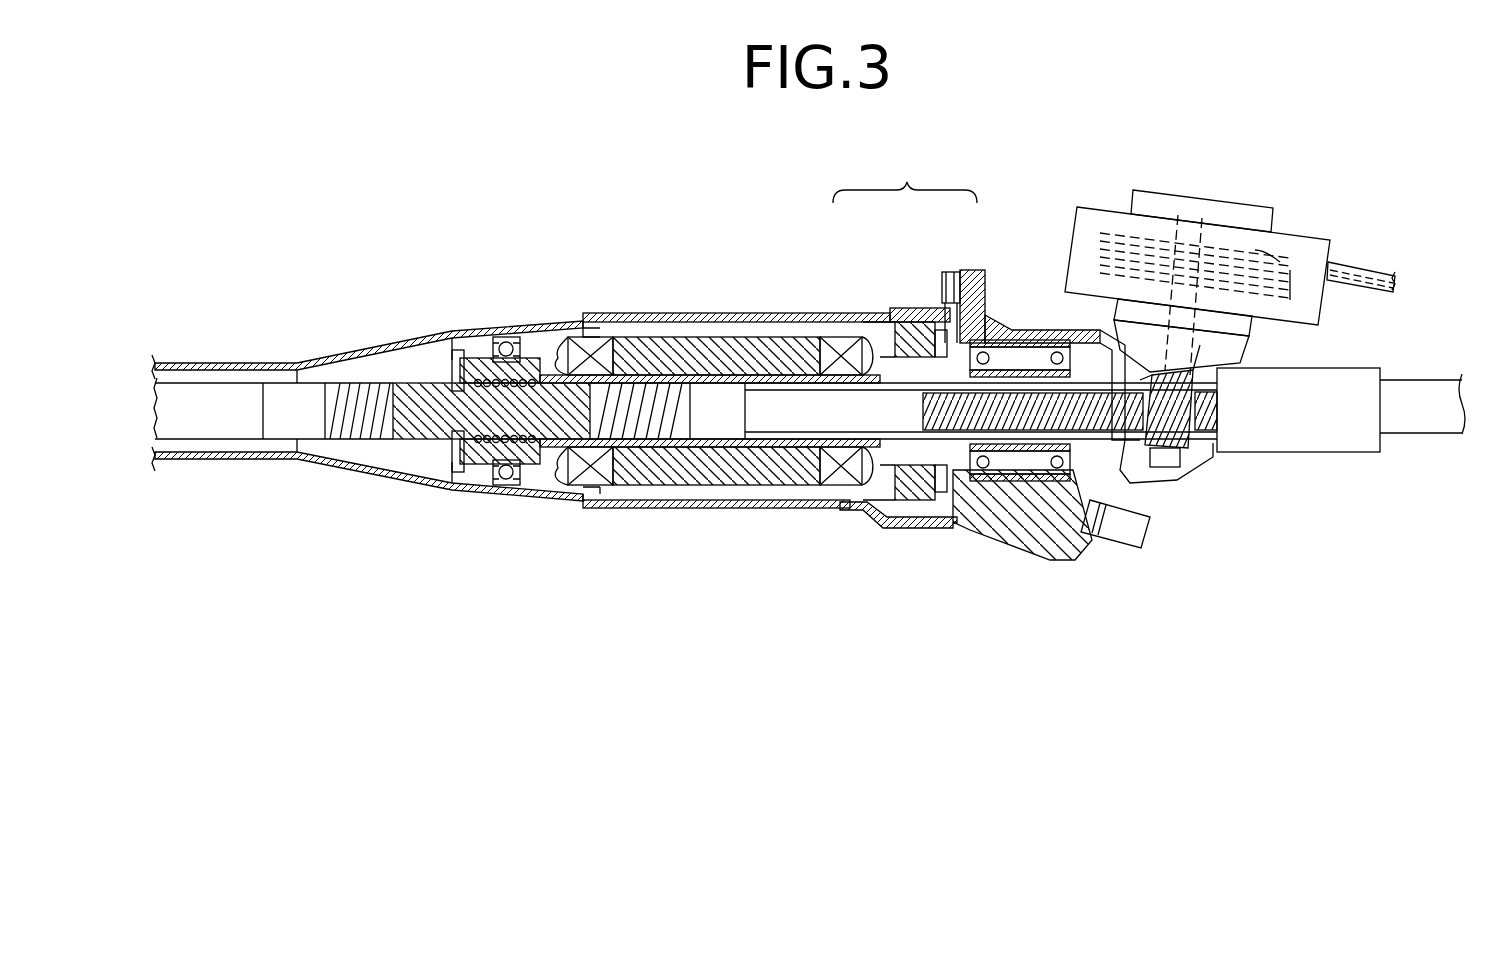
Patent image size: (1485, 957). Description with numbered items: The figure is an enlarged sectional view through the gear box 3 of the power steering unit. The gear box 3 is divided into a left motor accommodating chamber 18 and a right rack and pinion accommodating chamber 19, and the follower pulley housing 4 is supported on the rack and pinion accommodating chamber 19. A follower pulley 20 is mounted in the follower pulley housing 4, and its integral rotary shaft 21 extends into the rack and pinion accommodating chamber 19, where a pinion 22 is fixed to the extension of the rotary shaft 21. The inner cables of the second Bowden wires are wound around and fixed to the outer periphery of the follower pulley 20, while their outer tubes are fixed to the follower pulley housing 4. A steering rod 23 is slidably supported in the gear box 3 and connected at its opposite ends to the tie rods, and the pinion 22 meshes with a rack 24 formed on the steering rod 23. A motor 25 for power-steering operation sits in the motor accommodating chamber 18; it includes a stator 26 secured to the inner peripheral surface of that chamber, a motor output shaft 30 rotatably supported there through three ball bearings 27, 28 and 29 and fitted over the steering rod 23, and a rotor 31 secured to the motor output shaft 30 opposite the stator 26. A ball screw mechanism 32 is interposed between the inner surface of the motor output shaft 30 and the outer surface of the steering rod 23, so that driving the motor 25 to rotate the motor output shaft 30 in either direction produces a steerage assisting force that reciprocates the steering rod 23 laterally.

The gear box 3 is at (905, 174).
The follower pulley housing 4 is at (1105, 208).
The motor accommodating chamber 18 is at (838, 312).
The rack and pinion accommodating chamber 19 is at (1012, 312).
The follower pulley 20 is at (1256, 250).
The rotary shaft 21 is at (1215, 228).
The pinion 22 is at (1198, 456).
The steering rod 23 is at (394, 381).
The rack 24 is at (1112, 456).
The motor 25 is at (852, 500).
The stator 26 is at (690, 500).
The ball bearing 27 is at (501, 486).
The ball bearing 28 is at (984, 522).
The ball bearing 29 is at (1036, 534).
The motor output shaft 30 is at (795, 388).
The rotor 31 is at (716, 358).
The ball screw mechanism 32 is at (450, 450).